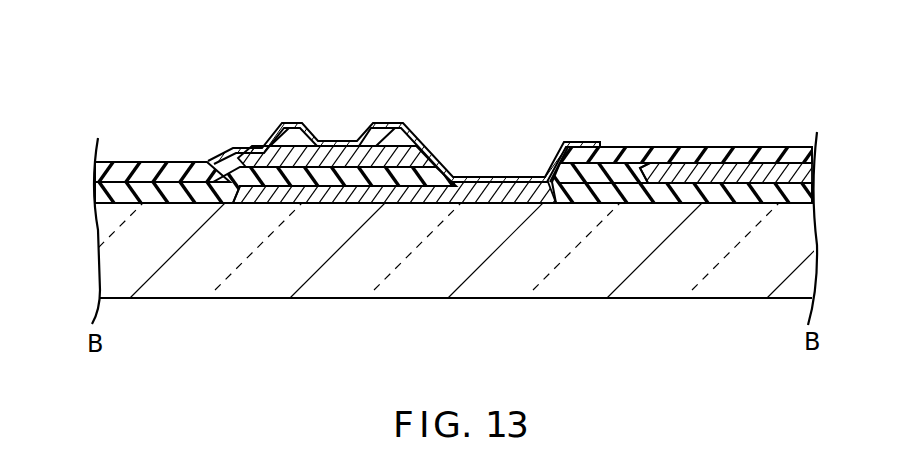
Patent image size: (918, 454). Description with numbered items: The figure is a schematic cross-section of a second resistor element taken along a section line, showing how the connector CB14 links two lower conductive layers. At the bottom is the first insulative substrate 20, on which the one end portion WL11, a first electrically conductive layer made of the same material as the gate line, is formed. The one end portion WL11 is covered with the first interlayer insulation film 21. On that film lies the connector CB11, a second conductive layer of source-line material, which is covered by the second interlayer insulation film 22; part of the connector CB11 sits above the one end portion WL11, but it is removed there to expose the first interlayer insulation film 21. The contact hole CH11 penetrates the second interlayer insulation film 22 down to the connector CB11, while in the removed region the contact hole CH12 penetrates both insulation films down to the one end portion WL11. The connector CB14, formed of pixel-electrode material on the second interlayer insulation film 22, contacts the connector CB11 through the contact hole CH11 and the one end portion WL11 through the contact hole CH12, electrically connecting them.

The first insulative substrate 20 is at (116, 249).
The first interlayer insulation film 21 is at (112, 191).
The second interlayer insulation film 22 is at (100, 170).
The one end portion WL11 is at (368, 192).
The connector CB11 is at (343, 152).
The connector CB14 is at (440, 152).
The contact hole CH11 is at (323, 128).
The contact hole CH12 is at (455, 175).